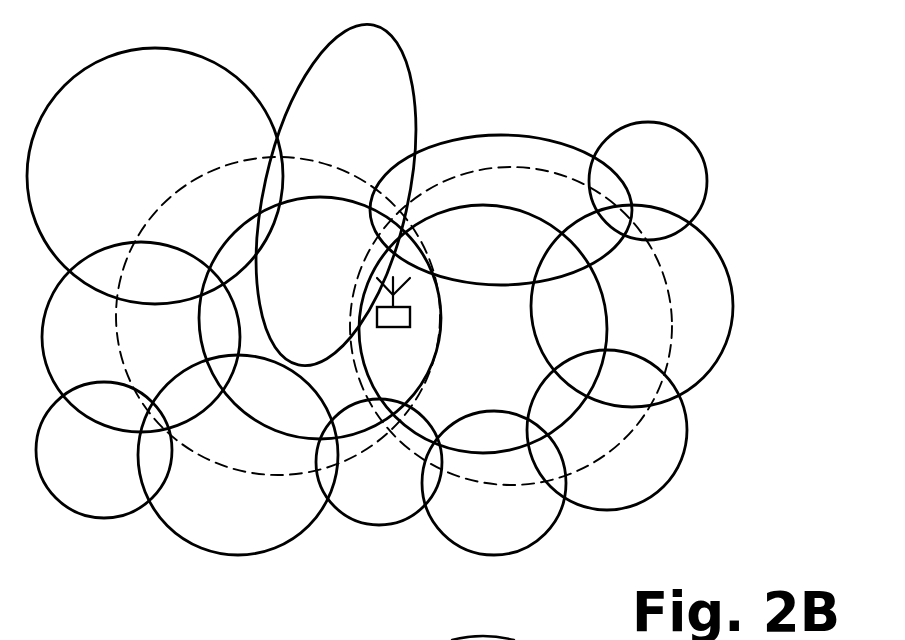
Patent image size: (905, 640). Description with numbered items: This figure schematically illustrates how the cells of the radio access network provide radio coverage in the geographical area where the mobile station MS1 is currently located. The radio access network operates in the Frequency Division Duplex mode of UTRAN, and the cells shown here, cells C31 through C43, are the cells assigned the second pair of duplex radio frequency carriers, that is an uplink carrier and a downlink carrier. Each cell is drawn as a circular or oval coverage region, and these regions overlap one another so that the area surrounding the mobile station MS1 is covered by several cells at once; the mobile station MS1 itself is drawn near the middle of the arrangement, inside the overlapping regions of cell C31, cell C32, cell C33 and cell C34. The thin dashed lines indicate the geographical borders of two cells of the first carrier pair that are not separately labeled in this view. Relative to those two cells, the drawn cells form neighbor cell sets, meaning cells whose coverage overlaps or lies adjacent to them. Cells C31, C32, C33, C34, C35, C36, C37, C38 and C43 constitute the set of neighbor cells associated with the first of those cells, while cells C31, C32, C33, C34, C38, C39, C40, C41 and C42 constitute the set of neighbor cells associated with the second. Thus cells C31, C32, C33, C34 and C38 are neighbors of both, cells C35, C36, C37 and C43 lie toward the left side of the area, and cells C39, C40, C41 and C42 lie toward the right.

The cell C31 is at (320, 318).
The cell C32 is at (483, 329).
The cell C33 is at (501, 210).
The cell C34 is at (336, 195).
The cell C35 is at (155, 176).
The cell C36 is at (141, 337).
The cell C37 is at (238, 455).
The cell C38 is at (379, 462).
The cell C39 is at (494, 483).
The cell C40 is at (607, 430).
The cell C41 is at (632, 306).
The cell C42 is at (648, 181).
The cell C43 is at (104, 450).
The mobile station MS1 is at (390, 327).